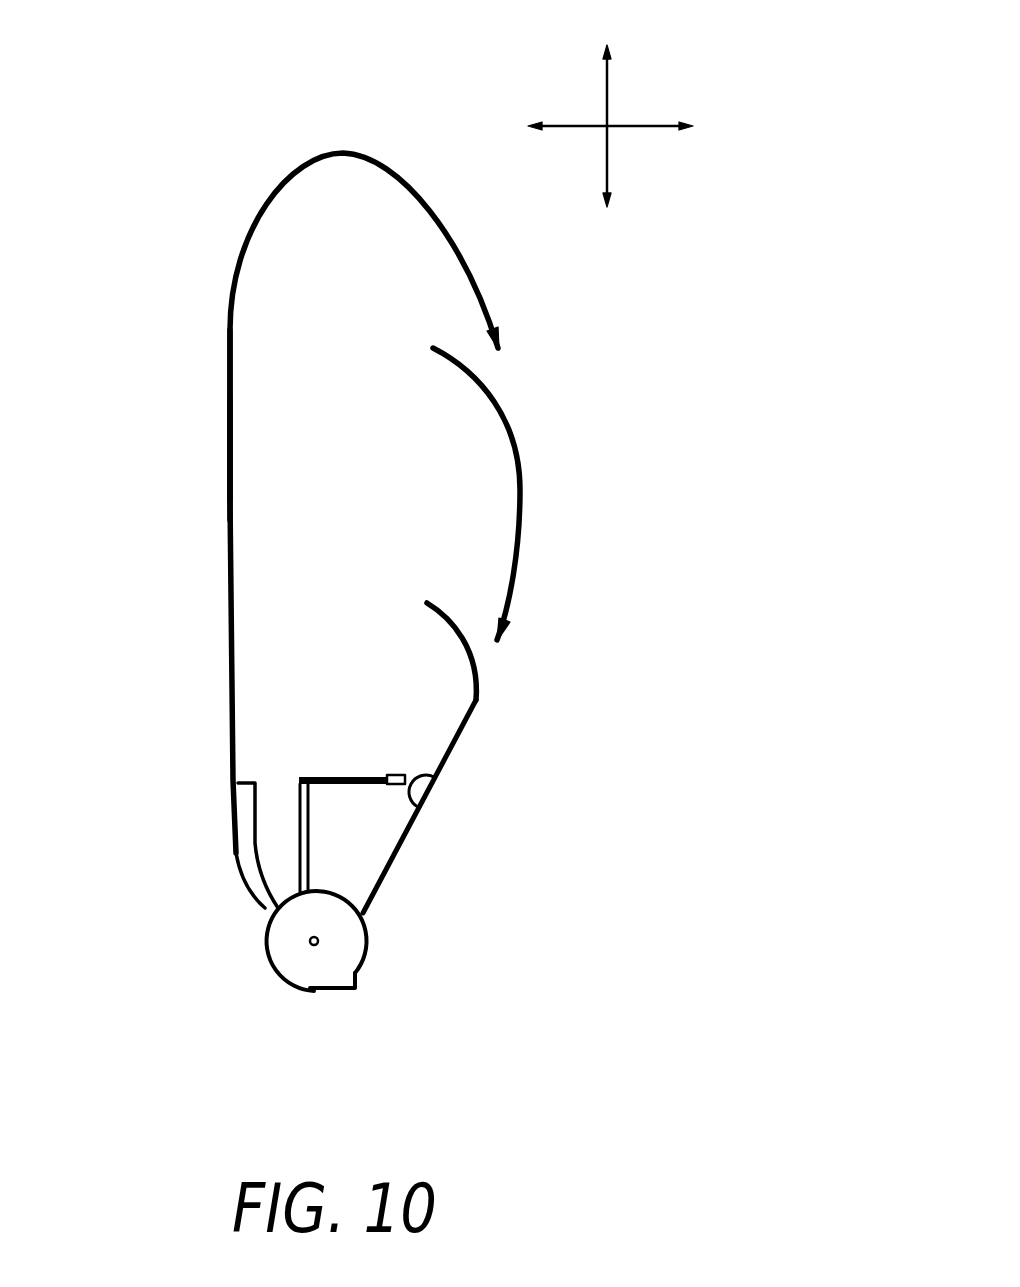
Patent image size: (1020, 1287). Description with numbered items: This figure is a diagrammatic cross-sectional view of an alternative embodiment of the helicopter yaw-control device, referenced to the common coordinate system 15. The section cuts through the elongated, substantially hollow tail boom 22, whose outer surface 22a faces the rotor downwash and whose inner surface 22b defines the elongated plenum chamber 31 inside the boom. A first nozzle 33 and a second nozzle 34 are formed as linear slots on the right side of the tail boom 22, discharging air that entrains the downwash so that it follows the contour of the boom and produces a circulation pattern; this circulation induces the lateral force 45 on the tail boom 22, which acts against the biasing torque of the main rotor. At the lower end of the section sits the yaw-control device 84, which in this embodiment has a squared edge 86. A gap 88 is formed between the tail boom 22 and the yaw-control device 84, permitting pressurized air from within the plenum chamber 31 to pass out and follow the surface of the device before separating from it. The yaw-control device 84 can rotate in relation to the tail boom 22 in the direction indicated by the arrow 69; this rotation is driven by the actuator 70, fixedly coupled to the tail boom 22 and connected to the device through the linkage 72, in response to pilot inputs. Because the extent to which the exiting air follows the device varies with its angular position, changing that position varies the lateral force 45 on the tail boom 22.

The coordinate system 15 is at (608, 125).
The tail boom 22 is at (218, 245).
The outer surface 22a is at (230, 330).
The inner surface 22b is at (232, 388).
The plenum chamber 31 is at (368, 526).
The first nozzle 33 is at (497, 368).
The second nozzle 34 is at (486, 654).
The lateral force 45 is at (205, 500).
The direction of movement arrow 69 is at (300, 1011).
The actuator 70 is at (392, 775).
The linkage 72 is at (323, 778).
The yaw-control device 84 is at (250, 1001).
The squared edge 86 is at (358, 978).
The gap 88 is at (365, 915).